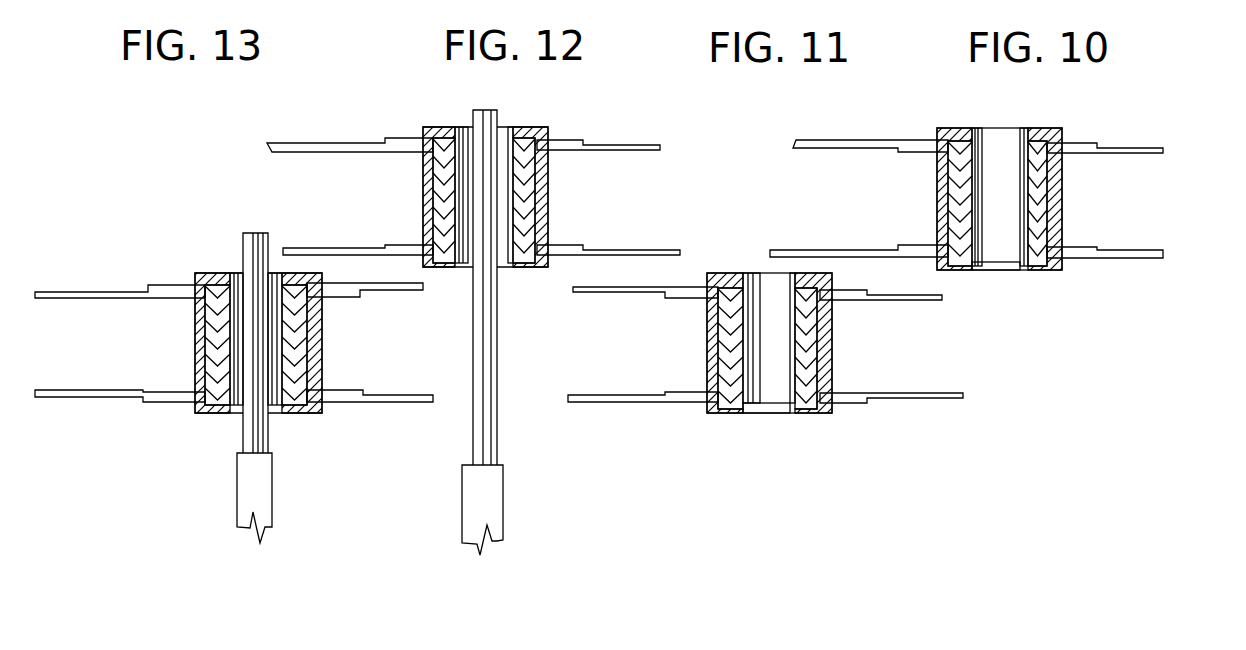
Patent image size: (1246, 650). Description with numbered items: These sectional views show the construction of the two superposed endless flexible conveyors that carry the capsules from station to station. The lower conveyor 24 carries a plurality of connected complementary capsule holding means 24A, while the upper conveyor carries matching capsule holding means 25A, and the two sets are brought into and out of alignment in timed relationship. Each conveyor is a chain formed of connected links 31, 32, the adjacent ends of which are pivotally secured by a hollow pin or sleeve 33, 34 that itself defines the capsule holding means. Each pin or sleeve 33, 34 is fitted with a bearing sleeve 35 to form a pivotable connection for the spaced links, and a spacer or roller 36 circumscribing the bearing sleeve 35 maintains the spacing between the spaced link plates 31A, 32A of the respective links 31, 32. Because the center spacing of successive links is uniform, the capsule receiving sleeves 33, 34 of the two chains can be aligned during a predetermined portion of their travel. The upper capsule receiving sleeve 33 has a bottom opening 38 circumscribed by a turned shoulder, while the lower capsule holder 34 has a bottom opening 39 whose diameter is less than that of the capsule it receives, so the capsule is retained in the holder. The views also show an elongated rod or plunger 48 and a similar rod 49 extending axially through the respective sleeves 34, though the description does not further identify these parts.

In FIG. 11, the endless flexible conveyor 24 is at (618, 403).
In FIG. 11, the capsule holding means 24A is at (862, 410).
In FIG. 13, the capsule holding means 24A is at (178, 273).
In FIG. 10, the capsule holding means 25A is at (1048, 121).
In FIG. 12, the capsule holding means 25A is at (545, 125).
In FIG. 10, the link 31 is at (1130, 142).
In FIG. 12, the link 31 is at (595, 137).
In FIG. 10, the link plate 31A is at (823, 148).
In FIG. 11, the link 32 is at (882, 307).
In FIG. 13, the link 32 is at (118, 289).
In FIG. 11, the link plate 32A is at (657, 292).
In FIG. 10, the hollow pin or sleeve 33 is at (998, 138).
In FIG. 12, the hollow pin or sleeve 33 is at (502, 135).
In FIG. 11, the hollow pin or sleeve 34 is at (778, 290).
In FIG. 13, the hollow pin or sleeve 34 is at (238, 273).
In FIG. 10, the bearing sleeve 35 is at (1052, 200).
In FIG. 10, the spacer or roller 36 is at (1062, 222).
In FIG. 10, the bottom opening 38 is at (1003, 262).
In FIG. 11, the bottom opening 39 is at (772, 408).
In FIG. 12, the rod 48 is at (497, 325).
In FIG. 13, the rod 49 is at (268, 433).